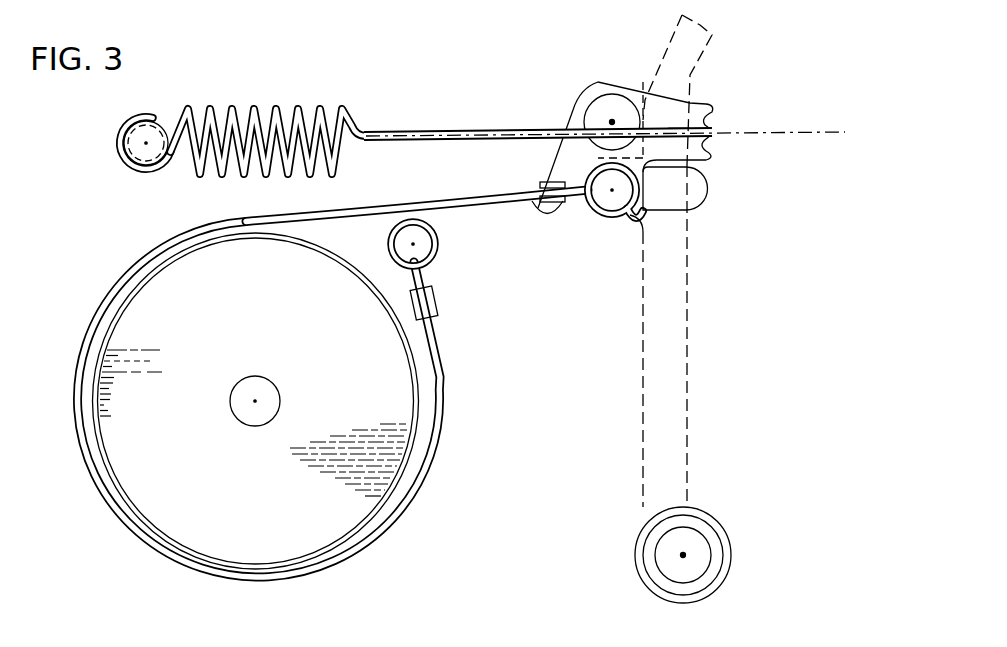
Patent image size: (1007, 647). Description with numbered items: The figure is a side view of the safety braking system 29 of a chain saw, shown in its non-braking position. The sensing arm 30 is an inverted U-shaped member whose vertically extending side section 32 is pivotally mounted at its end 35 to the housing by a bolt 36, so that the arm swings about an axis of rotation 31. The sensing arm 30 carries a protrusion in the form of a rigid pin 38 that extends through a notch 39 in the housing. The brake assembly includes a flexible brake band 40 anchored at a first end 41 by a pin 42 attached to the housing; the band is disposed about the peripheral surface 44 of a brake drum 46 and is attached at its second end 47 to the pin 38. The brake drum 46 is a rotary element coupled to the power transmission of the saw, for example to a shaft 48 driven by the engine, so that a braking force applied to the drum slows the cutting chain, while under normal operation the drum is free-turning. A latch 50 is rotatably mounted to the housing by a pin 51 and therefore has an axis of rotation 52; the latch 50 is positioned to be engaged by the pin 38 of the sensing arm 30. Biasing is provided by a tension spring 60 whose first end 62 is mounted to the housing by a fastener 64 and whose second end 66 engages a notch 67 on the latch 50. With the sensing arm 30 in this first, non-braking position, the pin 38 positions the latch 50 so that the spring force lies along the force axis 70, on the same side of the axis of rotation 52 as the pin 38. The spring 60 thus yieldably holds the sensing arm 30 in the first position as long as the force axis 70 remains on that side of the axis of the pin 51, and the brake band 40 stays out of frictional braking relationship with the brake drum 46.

The safety braking system 29 is at (490, 99).
The sensing arm 30 is at (705, 57).
The axis of rotation 31 is at (684, 555).
The side section 32 is at (687, 272).
The end 35 is at (645, 550).
The bolt 36 is at (667, 587).
The rigid pin 38 is at (597, 212).
The notch 39 is at (711, 170).
The flexible brake band 40 is at (370, 209).
The first end 41 is at (435, 318).
The pin 42 is at (432, 258).
The peripheral surface 44 is at (333, 560).
The brake drum 46 is at (256, 401).
The second end 47 is at (538, 208).
The shaft 48 is at (240, 427).
The latch 50 is at (574, 108).
The pin 51 is at (600, 94).
The axis of rotation 52 is at (610, 122).
The tension spring 60 is at (300, 108).
The first end 62 is at (151, 111).
The fastener 64 is at (128, 156).
The second end 66 is at (673, 127).
The notch 67 is at (714, 129).
The force axis 70 is at (816, 133).